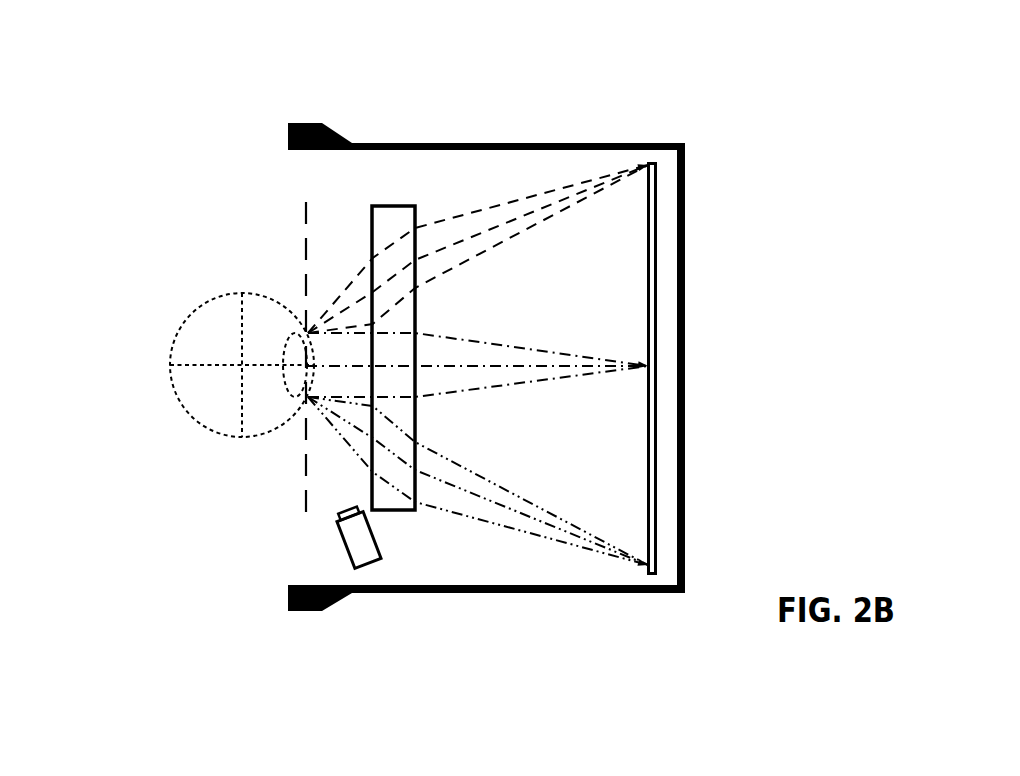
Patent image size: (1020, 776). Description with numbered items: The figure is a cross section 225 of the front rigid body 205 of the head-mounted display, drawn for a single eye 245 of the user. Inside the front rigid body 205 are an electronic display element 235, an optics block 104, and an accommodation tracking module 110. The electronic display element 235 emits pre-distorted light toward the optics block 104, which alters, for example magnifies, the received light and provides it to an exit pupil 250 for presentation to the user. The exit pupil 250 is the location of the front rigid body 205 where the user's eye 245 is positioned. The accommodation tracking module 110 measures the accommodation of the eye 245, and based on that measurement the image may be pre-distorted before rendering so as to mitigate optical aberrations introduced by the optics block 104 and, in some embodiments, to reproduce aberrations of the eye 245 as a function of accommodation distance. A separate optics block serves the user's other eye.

The cross section 225 is at (22, 20).
The front rigid body 205 is at (680, 136).
The electronic display element 235 is at (658, 177).
The optics block 104 is at (372, 220).
The eye 245 is at (207, 303).
The exit pupil 250 is at (297, 506).
The accommodation tracking module 110 is at (365, 548).